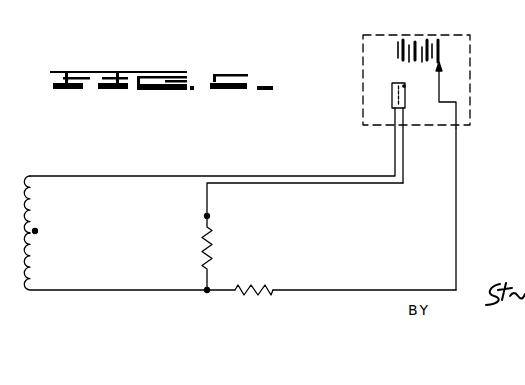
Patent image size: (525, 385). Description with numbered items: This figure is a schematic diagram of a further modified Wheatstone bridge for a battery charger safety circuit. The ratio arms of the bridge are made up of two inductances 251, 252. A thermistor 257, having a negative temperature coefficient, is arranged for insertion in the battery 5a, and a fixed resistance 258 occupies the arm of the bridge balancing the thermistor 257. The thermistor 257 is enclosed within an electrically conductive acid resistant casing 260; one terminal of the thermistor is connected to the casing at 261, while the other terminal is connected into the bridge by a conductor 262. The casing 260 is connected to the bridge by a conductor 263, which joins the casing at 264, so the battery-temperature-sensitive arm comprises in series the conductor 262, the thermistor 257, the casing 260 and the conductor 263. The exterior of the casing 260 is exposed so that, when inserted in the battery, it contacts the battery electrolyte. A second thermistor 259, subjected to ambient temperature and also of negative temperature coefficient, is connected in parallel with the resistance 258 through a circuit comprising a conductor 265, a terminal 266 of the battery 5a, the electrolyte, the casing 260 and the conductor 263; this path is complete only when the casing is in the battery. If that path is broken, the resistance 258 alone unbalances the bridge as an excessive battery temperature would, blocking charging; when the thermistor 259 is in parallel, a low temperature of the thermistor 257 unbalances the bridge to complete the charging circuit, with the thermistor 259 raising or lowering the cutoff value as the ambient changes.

The battery 5a is at (463, 20).
The inductance 251 is at (40, 265).
The inductance 252 is at (40, 194).
The thermistor 257 is at (392, 96).
The fixed resistance 258 is at (212, 240).
The second thermistor 259 is at (258, 289).
The casing 260 is at (392, 103).
The connection of thermistor terminal to casing 261 is at (392, 84).
The conductor 262 is at (303, 175).
The conductor 263 is at (372, 184).
The connection of conductor to casing 264 is at (405, 109).
The conductor 265 is at (456, 250).
The terminal of battery 266 is at (441, 66).